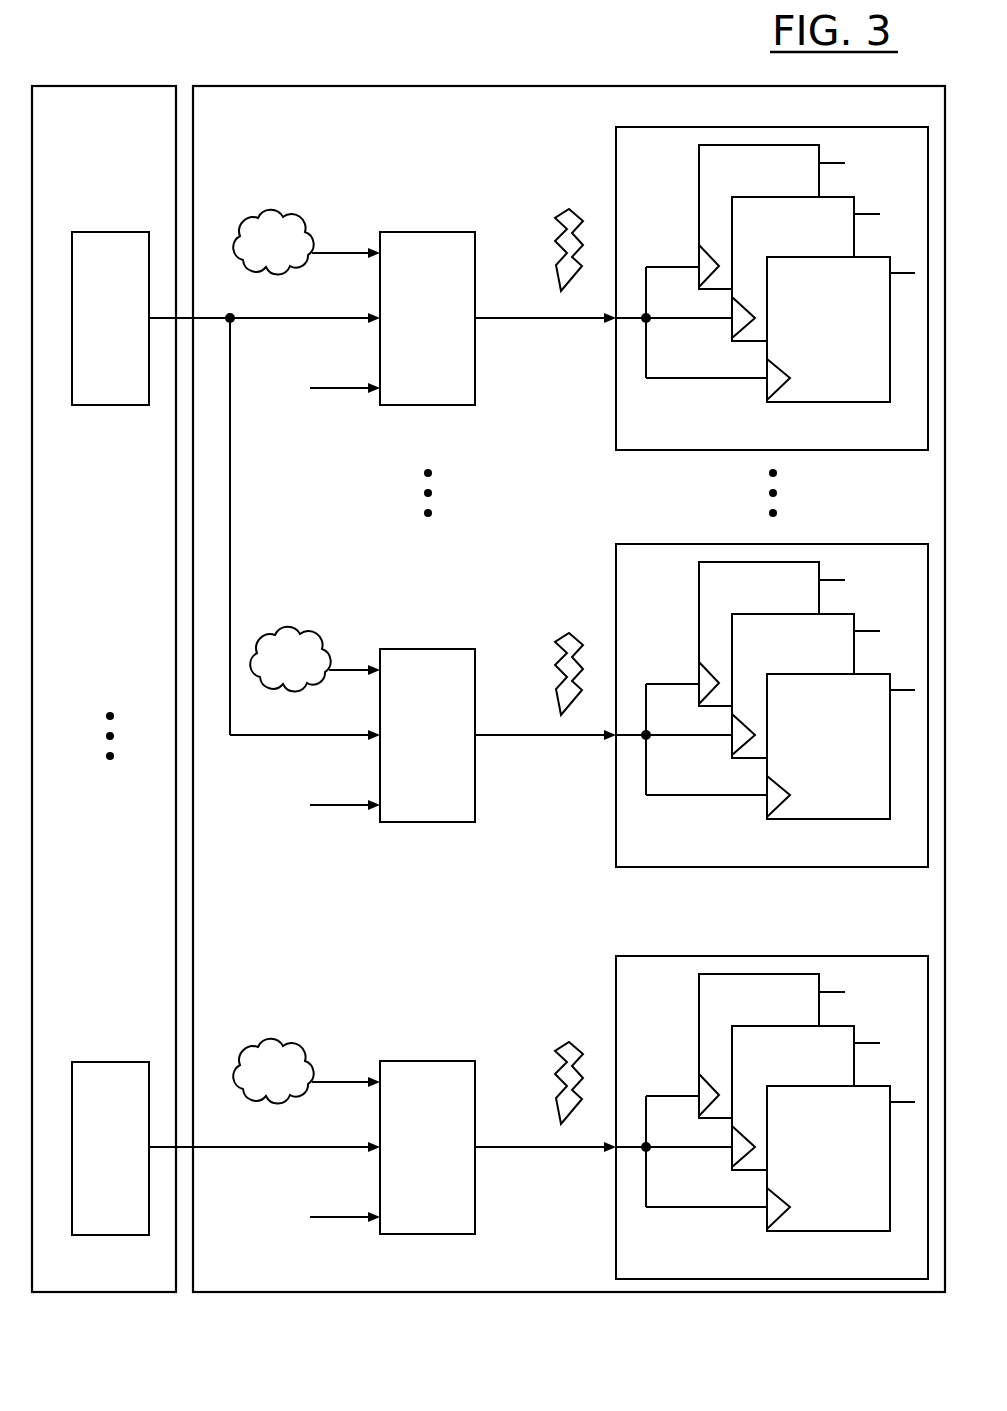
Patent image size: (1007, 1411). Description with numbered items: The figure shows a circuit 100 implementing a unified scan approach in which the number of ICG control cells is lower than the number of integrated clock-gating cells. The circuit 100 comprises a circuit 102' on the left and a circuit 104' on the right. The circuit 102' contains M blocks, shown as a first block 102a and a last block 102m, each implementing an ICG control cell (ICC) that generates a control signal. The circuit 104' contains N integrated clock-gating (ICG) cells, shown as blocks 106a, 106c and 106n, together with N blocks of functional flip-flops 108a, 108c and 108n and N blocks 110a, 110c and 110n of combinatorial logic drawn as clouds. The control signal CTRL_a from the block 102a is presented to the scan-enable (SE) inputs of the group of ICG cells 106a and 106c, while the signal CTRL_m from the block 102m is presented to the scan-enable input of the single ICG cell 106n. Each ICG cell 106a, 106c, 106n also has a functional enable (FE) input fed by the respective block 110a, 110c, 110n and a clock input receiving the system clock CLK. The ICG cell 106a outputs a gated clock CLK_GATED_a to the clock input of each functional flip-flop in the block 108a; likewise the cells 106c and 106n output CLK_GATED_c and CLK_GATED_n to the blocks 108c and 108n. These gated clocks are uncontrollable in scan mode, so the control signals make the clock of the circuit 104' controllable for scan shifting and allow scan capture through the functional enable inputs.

The circuit 100 is at (347, 25).
The circuit 102' is at (104, 674).
The circuit 104' is at (547, 674).
The block implementing an ICG control cell 102a is at (137, 233).
The block implementing an ICG control cell 102m is at (117, 1062).
The integrated clock-gating cell 106a is at (418, 232).
The integrated clock-gating cell 106c is at (409, 737).
The integrated clock-gating cell 106n is at (409, 1149).
The block of functional flip-flops 108a is at (692, 127).
The block of functional flip-flops 108c is at (772, 691).
The block of functional flip-flops 108n is at (772, 1103).
The block implementing circuitry 110a is at (272, 212).
The block implementing circuitry 110c is at (290, 630).
The block implementing circuitry 110n is at (255, 1058).